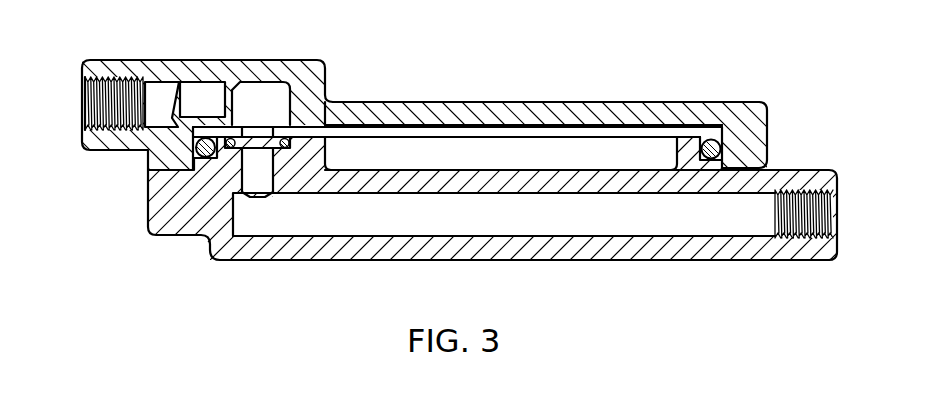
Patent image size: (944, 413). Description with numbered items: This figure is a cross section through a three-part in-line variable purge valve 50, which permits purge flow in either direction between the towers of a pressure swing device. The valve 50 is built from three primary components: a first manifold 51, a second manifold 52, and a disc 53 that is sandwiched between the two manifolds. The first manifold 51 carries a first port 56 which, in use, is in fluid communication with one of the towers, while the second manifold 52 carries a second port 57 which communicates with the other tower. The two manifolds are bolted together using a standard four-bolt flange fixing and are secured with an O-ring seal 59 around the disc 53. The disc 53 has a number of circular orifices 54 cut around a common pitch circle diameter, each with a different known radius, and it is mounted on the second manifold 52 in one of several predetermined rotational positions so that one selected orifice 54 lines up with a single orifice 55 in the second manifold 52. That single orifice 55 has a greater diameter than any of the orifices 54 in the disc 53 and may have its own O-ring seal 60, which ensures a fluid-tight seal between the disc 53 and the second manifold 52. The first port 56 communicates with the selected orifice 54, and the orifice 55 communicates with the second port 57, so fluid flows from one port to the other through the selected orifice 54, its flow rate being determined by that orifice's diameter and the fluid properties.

The variable purge valve 50 is at (472, 154).
The first manifold 51 is at (400, 85).
The second manifold 52 is at (618, 248).
The disc 53 is at (390, 125).
The circular orifices 54 is at (236, 154).
The single orifice 55 is at (258, 192).
The first port 56 is at (82, 93).
The second port 57 is at (833, 205).
The O-ring seal 59 is at (480, 223).
The O-ring seal 60 is at (203, 157).